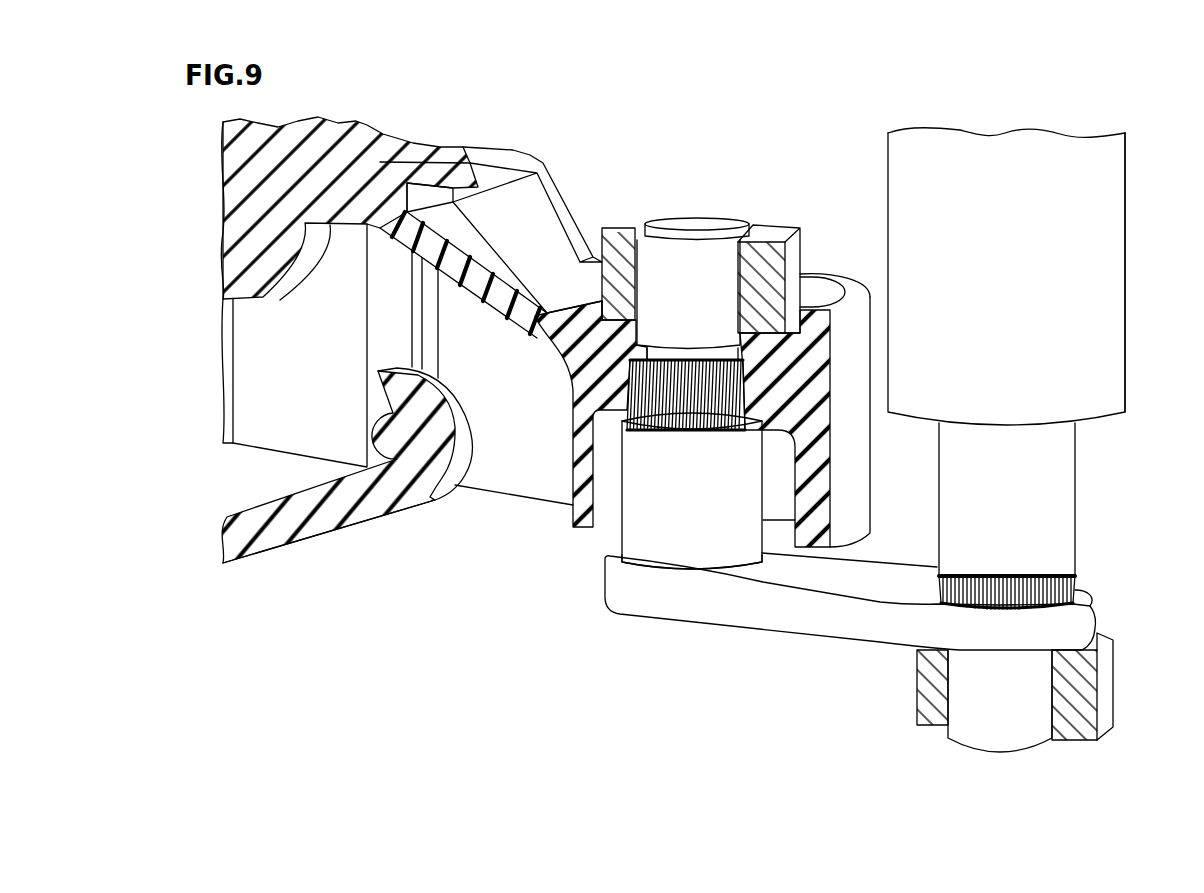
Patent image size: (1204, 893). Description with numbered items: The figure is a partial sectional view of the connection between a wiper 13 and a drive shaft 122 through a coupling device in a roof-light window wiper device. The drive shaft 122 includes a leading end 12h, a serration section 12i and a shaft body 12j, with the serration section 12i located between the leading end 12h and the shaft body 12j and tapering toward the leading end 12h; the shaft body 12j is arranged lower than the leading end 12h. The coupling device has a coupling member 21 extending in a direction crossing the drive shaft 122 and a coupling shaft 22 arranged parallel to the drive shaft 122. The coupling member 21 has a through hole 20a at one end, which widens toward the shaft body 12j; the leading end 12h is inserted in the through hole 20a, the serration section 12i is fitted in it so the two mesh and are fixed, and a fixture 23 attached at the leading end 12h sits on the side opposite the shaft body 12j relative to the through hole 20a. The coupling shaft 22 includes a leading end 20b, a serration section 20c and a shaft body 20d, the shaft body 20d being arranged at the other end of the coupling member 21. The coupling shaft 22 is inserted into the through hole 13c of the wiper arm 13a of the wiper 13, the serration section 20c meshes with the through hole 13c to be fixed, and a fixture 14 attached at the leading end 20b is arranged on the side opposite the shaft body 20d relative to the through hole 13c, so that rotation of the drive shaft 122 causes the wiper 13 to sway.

The wiper arm 13a is at (370, 168).
The wiper 13 is at (588, 372).
The fixture 14 is at (620, 250).
The leading end 20b is at (685, 278).
The serration section 20c is at (650, 400).
The shaft body 20d is at (647, 550).
The coupling shaft 22 is at (683, 527).
The through hole 13c is at (743, 390).
The drive shaft 122 is at (1088, 297).
The shaft body 12j is at (1100, 178).
The serration section 12i is at (1067, 583).
The through hole 20a is at (1073, 607).
The coupling member 21 is at (853, 580).
The fixture 23 is at (930, 703).
The leading end 12h is at (1000, 715).